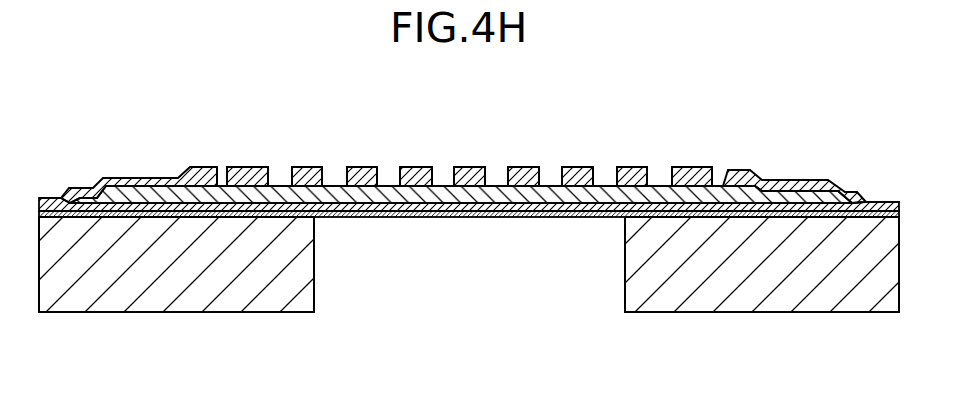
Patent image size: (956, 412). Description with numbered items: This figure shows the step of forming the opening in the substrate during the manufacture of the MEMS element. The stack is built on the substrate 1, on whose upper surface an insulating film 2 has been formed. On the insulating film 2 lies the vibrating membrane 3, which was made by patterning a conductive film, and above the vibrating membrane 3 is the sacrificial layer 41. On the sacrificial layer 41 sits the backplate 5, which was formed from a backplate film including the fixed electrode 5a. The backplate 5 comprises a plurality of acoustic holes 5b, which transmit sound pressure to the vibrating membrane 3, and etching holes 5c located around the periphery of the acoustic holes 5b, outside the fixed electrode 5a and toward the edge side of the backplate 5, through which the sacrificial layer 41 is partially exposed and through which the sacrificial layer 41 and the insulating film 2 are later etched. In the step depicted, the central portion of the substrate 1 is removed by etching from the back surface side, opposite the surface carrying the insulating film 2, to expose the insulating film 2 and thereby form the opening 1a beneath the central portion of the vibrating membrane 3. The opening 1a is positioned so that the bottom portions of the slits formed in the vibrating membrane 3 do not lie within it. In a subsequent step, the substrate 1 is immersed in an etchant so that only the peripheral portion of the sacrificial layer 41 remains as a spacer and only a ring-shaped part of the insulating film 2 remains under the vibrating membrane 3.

The substrate 1 is at (117, 297).
The opening 1a is at (613, 265).
The insulating film 2 is at (126, 192).
The vibrating membrane 3 is at (512, 217).
The sacrificial layer 41 is at (783, 192).
The backplate 5 is at (825, 186).
The fixed electrode 5a is at (632, 182).
The acoustic hole 5b is at (280, 164).
The etching hole 5c is at (220, 158).